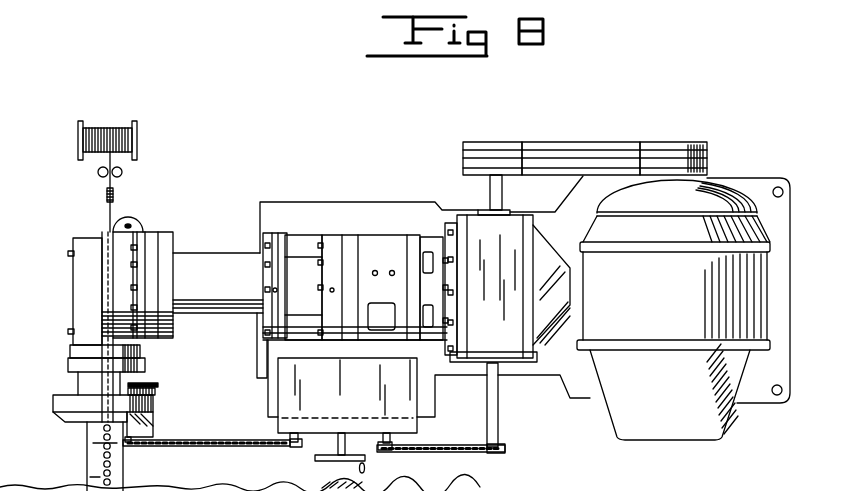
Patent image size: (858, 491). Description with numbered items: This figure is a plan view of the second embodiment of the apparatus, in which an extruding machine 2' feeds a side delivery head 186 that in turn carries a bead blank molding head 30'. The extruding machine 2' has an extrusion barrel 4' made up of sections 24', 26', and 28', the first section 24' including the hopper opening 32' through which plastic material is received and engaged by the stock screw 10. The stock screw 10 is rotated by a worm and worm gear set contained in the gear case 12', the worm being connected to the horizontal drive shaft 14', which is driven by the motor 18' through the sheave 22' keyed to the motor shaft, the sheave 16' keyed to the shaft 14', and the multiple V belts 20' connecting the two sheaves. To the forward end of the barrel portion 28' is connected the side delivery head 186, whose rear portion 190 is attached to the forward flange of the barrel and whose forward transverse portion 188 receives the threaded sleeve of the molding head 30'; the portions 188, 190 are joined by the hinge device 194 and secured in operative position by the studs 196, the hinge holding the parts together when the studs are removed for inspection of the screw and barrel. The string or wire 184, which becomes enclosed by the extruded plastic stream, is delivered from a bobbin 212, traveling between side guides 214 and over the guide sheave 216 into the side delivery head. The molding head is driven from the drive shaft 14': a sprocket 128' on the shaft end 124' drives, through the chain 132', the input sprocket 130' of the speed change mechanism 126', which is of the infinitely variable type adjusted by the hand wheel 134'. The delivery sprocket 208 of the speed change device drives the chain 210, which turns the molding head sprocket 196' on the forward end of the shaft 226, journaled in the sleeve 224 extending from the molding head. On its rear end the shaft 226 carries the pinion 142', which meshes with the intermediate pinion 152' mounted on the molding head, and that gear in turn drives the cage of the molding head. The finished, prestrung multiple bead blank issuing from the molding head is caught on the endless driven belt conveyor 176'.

The stock screw 10 is at (52, 130).
The bobbin 212 is at (123, 130).
The side guides 214 is at (123, 172).
The string or wire 184 is at (115, 192).
The side delivery head 186 is at (157, 221).
The hinge device 194 is at (136, 226).
The rear portion of the side delivery head 190 is at (150, 262).
The barrel section 28' is at (230, 270).
The guide sheave 216 is at (107, 200).
The studs 196 is at (51, 306).
The forward transverse portion of the side delivery head 188 is at (87, 300).
The molding head 30' is at (87, 383).
The intermediate pinion 152' is at (154, 357).
The pinion 142' is at (175, 371).
The shaft 226 is at (157, 392).
The sleeve 224 is at (158, 422).
The chain 210 is at (222, 441).
The molding head sprocket 196' is at (152, 452).
The endless driven belt conveyor 176' is at (102, 456).
The delivery sprocket 208 is at (288, 453).
The speed change mechanism 126' is at (347, 415).
The hand wheel 134' is at (340, 459).
The input sprocket 130' is at (397, 463).
The chain 132' is at (441, 465).
The sprocket 128' is at (500, 464).
The extruding machine 2' is at (503, 396).
The end of the driven shaft 124' is at (530, 407).
The gear case 12' is at (507, 314).
The motor 18' is at (683, 323).
The sheave 22' is at (697, 146).
The multiple V belts 20' is at (581, 145).
The sheave 16' is at (500, 146).
The horizontal drive shaft 14' is at (508, 194).
The extrusion barrel 4' is at (367, 284).
The barrel section 26' is at (309, 258).
The barrel section 24' is at (385, 256).
The hopper opening 32' is at (381, 306).